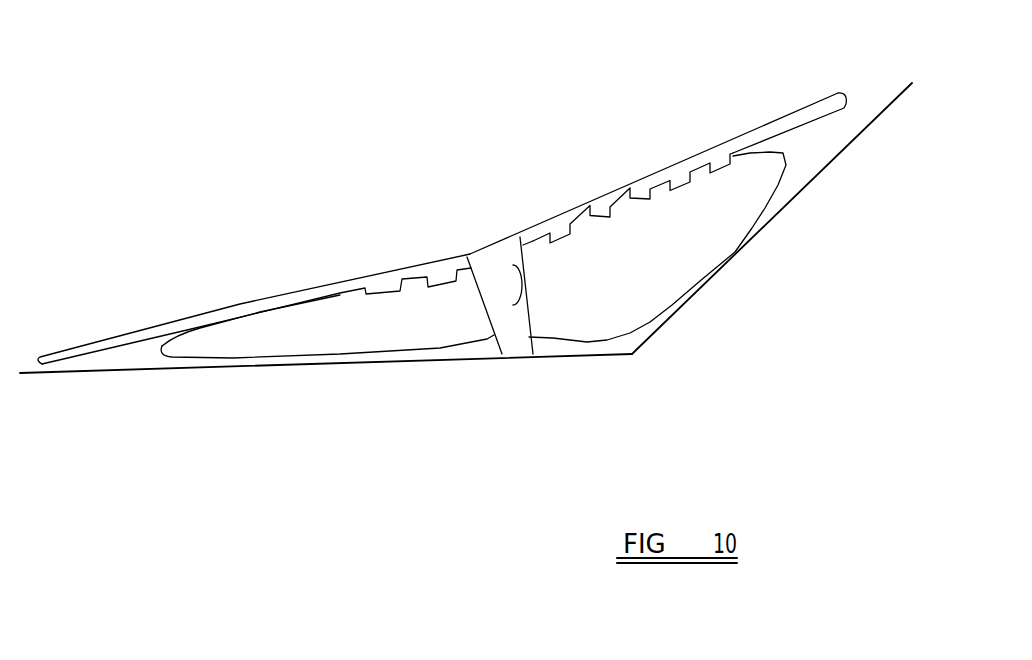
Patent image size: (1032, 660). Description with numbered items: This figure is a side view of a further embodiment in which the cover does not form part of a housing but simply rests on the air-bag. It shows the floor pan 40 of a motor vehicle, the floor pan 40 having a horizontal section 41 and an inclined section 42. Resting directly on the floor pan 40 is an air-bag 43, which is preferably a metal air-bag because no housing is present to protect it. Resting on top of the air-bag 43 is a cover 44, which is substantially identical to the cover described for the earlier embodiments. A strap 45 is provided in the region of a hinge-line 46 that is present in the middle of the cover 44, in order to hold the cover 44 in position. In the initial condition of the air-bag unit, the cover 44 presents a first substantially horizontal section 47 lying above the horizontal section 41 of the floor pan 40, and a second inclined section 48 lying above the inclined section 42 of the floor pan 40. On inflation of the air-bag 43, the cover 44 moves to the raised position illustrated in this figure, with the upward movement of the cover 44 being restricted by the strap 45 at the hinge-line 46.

The floor pan 40 is at (608, 357).
The horizontal section 41 is at (443, 362).
The inclined section 42 is at (768, 225).
The air-bag 43 is at (372, 333).
The cover 44 is at (658, 131).
The strap 45 is at (517, 305).
The hinge-line 46 is at (490, 242).
The first substantially horizontal section 47 is at (283, 288).
The second inclined section 48 is at (717, 150).